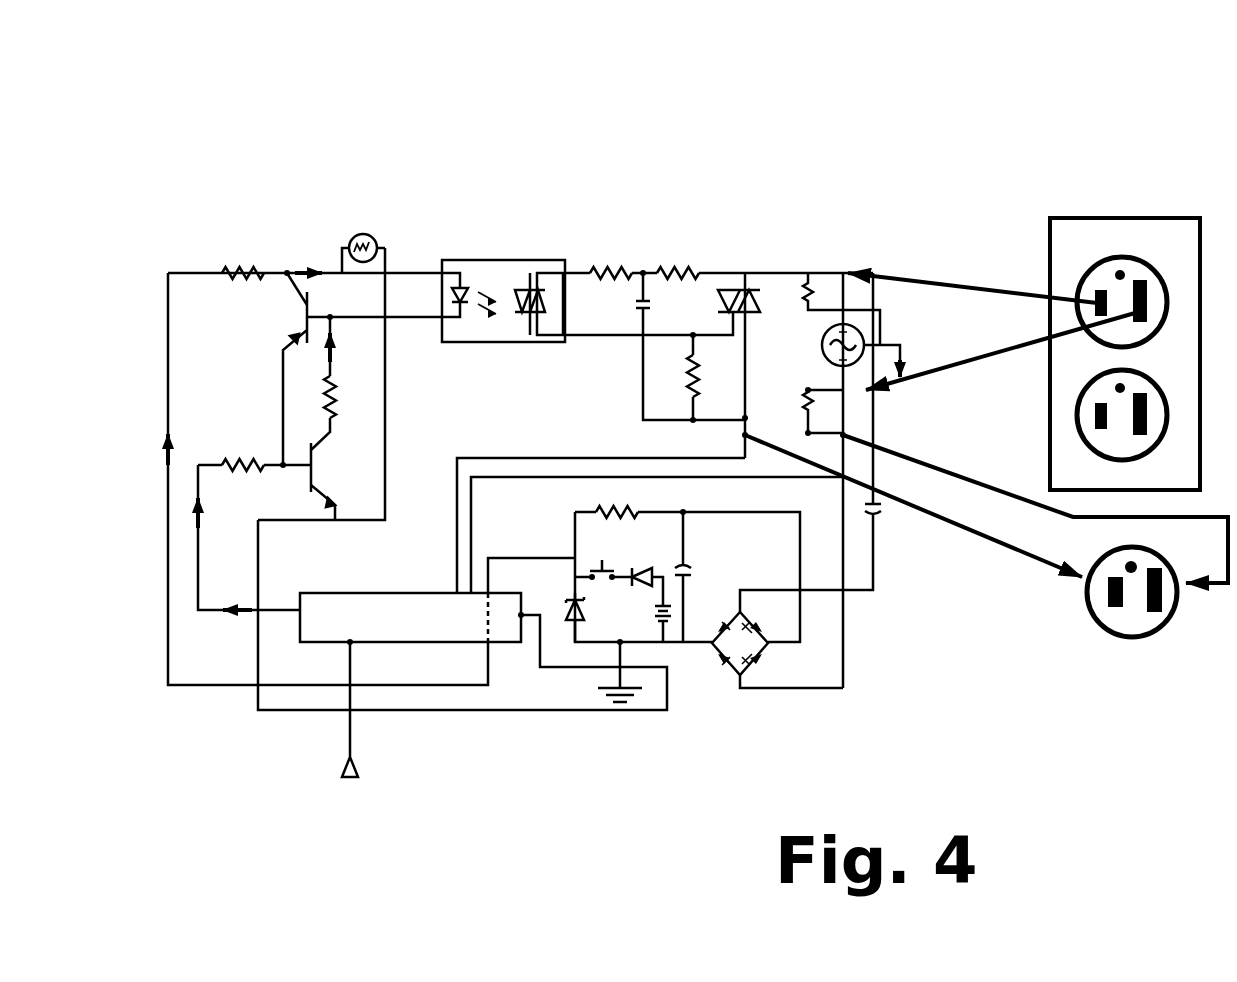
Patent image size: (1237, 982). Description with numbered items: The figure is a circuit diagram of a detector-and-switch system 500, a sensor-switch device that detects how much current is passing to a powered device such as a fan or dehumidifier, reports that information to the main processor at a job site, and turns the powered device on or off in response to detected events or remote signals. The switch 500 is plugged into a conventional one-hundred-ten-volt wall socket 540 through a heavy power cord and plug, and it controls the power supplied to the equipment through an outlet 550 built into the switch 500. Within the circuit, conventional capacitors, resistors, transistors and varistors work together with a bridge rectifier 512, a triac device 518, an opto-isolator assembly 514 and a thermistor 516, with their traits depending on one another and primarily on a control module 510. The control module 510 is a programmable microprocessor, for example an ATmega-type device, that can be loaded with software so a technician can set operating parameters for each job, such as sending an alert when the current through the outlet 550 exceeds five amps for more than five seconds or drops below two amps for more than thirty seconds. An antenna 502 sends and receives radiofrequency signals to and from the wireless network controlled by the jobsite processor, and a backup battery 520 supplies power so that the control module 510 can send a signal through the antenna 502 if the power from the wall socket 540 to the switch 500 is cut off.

The detector-and-switch system 500 is at (602, 197).
The antenna 502 is at (375, 786).
The control module 510 is at (303, 660).
The bridge rectifier 512 is at (778, 676).
The opto-isolator assembly 514 is at (478, 233).
The thermistor 516 is at (343, 200).
The triac device 518 is at (762, 278).
The backup battery 520 is at (668, 637).
The wall socket 540 is at (1040, 213).
The outlet 550 is at (1146, 665).